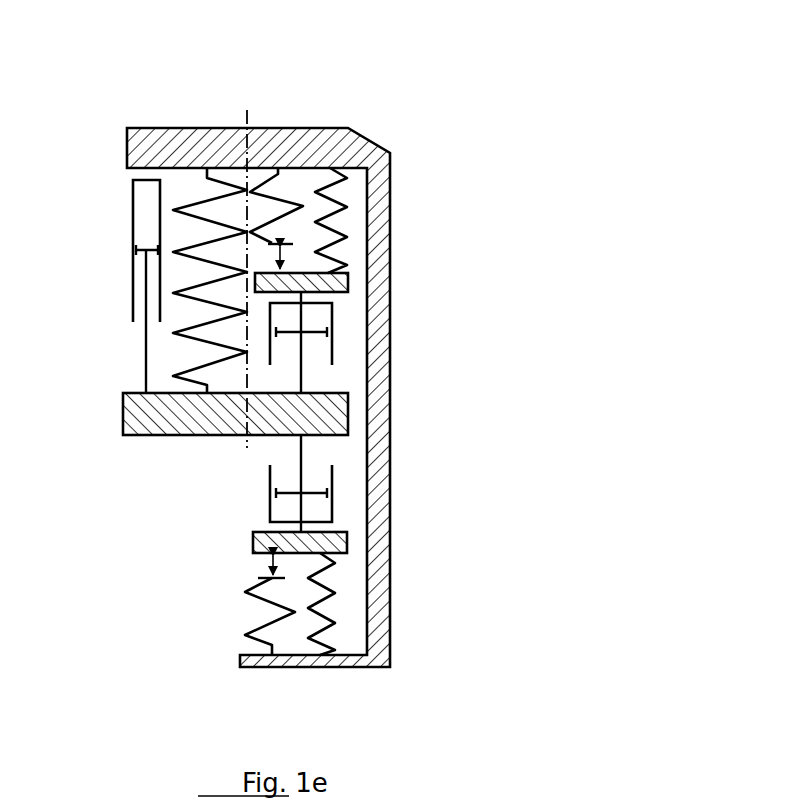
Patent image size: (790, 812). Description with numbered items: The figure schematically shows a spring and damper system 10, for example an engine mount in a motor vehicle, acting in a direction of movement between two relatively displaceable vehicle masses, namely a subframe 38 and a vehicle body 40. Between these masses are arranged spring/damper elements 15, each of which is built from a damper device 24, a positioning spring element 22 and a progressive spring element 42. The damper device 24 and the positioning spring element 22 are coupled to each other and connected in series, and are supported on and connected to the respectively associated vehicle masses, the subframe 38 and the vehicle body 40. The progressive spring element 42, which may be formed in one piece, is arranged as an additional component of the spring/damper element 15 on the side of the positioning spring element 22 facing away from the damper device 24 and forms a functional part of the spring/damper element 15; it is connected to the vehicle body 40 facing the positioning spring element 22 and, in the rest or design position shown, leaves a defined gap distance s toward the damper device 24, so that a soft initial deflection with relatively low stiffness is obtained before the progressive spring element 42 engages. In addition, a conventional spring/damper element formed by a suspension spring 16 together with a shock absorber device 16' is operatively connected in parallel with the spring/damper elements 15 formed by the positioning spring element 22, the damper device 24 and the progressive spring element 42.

The spring and damper system 10 is at (259, 94).
The spring/damper element 15 is at (390, 285).
The suspension spring 16 is at (152, 284).
The shock absorber device 16' is at (96, 286).
The positioning spring element 22 is at (343, 210).
The damper device 24 is at (317, 320).
The subframe 38 is at (342, 313).
The vehicle body 40 is at (158, 420).
The progressive spring element 42 is at (282, 200).